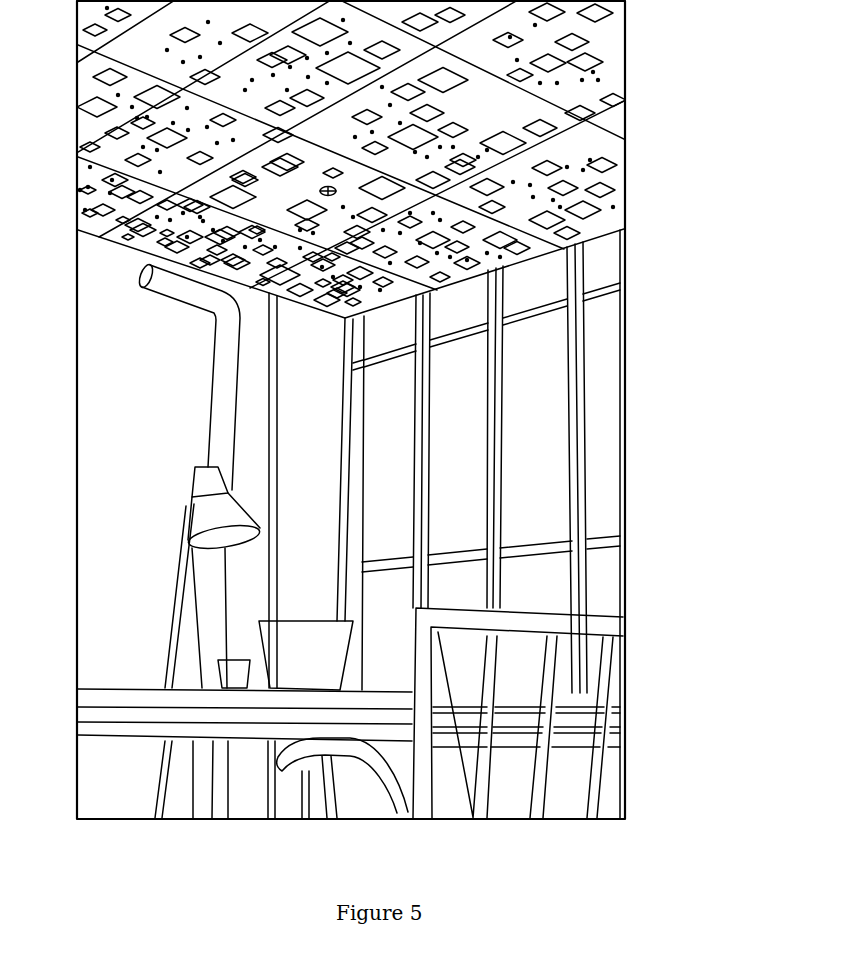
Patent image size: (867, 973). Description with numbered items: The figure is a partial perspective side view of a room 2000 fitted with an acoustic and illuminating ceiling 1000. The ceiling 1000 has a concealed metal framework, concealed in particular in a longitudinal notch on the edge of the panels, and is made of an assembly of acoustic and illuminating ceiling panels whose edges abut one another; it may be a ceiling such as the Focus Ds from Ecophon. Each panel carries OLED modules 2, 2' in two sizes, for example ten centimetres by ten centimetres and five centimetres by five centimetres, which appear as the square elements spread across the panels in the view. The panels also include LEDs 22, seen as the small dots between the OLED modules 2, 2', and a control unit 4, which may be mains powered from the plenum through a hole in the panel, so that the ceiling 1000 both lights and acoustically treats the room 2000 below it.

The OLED module 2' is at (116, 47).
The OLED module 2 is at (97, 99).
The LED 22 is at (204, 149).
The control unit 4 is at (300, 192).
The acoustic and illuminating ceiling 1000 is at (640, 94).
The room 2000 is at (698, 356).